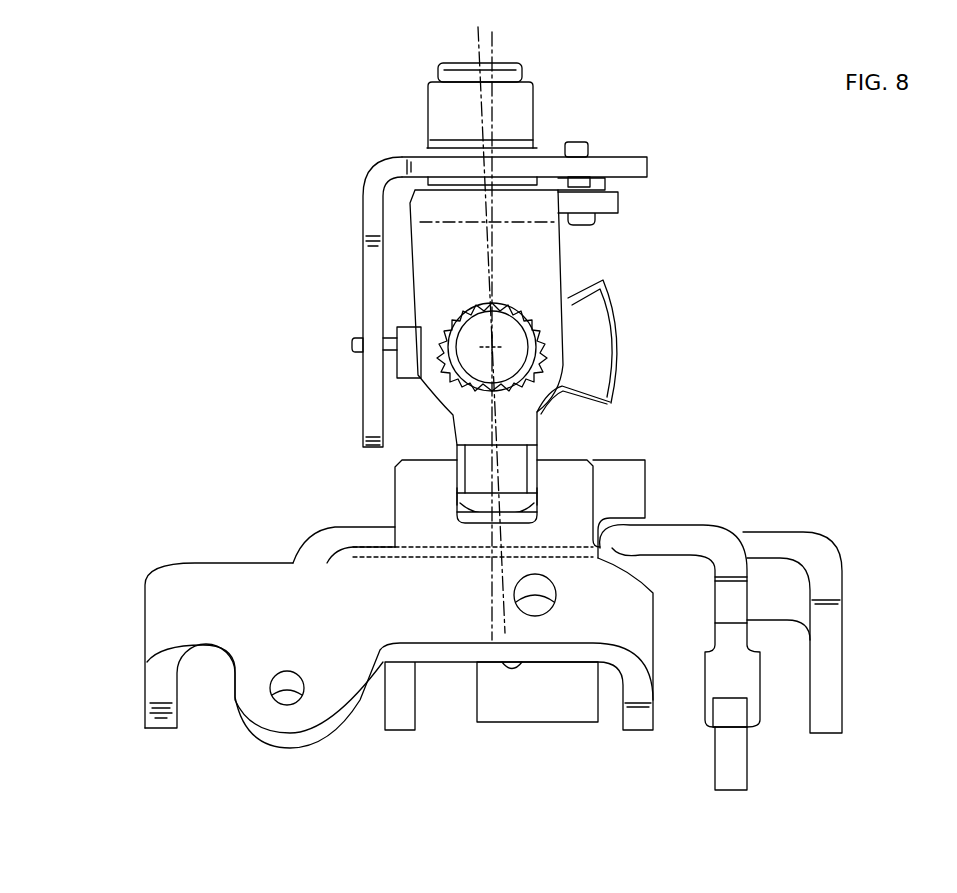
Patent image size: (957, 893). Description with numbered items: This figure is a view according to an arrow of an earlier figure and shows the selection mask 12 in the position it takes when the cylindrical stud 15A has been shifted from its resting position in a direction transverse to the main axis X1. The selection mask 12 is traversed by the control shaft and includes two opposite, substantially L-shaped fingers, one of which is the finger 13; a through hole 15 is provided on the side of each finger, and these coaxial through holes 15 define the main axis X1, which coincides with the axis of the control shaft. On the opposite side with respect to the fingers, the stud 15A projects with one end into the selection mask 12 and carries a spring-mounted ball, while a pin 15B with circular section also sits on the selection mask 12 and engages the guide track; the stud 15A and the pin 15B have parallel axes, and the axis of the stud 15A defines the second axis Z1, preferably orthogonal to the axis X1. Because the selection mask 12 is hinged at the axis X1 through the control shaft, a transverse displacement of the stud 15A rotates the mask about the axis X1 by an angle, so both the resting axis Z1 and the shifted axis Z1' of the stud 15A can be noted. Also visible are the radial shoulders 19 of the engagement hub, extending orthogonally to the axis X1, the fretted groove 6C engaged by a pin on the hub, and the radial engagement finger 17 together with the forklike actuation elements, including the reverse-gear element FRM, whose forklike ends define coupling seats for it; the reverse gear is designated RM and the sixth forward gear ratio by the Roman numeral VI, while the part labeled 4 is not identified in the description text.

The mounting plate 4 is at (647, 167).
The fretted groove 6C is at (352, 344).
The selection mask 12 is at (563, 255).
The finger 13 is at (513, 478).
The through hole 15 is at (527, 385).
The cylindrical stud 15A is at (517, 88).
The pin 15B is at (580, 142).
The radial engagement finger 17 is at (488, 500).
The radial shoulders 19 is at (603, 335).
The main axis X1 is at (492, 347).
The second axis Z1 is at (545, 336).
The shifted stud axis Z1' is at (431, 330).
The reverse gear forklike actuation element RM is at (410, 475).
The sixth forward gear ratio VI is at (625, 480).
The fourth forklike actuation element FRM is at (165, 590).